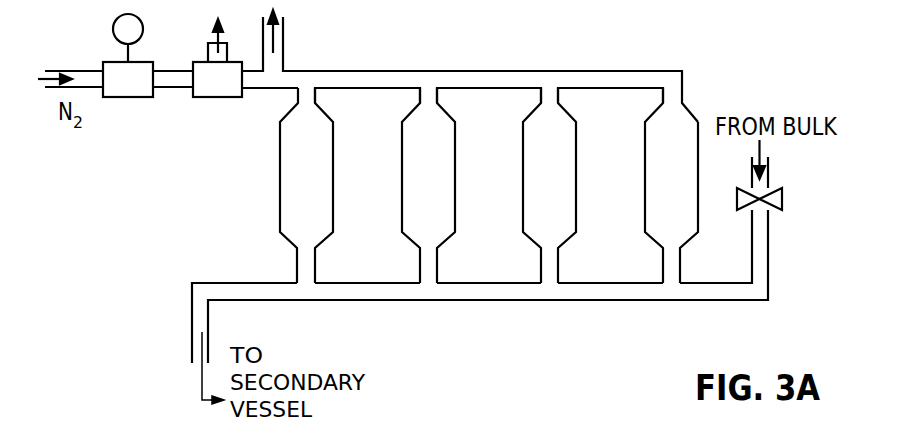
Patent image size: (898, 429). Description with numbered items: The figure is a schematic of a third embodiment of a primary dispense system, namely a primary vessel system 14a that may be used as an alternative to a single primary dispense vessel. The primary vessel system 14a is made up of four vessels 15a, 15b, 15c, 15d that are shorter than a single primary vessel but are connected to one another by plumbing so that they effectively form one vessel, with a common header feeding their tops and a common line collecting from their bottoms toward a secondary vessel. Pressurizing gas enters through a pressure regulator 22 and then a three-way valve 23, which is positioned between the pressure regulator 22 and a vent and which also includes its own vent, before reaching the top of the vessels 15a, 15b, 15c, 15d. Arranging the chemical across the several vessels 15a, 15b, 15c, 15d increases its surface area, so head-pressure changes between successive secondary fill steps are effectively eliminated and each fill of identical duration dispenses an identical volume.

The primary vessel system 14a is at (232, 197).
The vessel 15a is at (287, 241).
The vessel 15b is at (409, 241).
The vessel 15c is at (529, 241).
The vessel 15d is at (652, 241).
The pressure regulator 22 is at (130, 97).
The three-way valve 23 is at (213, 97).